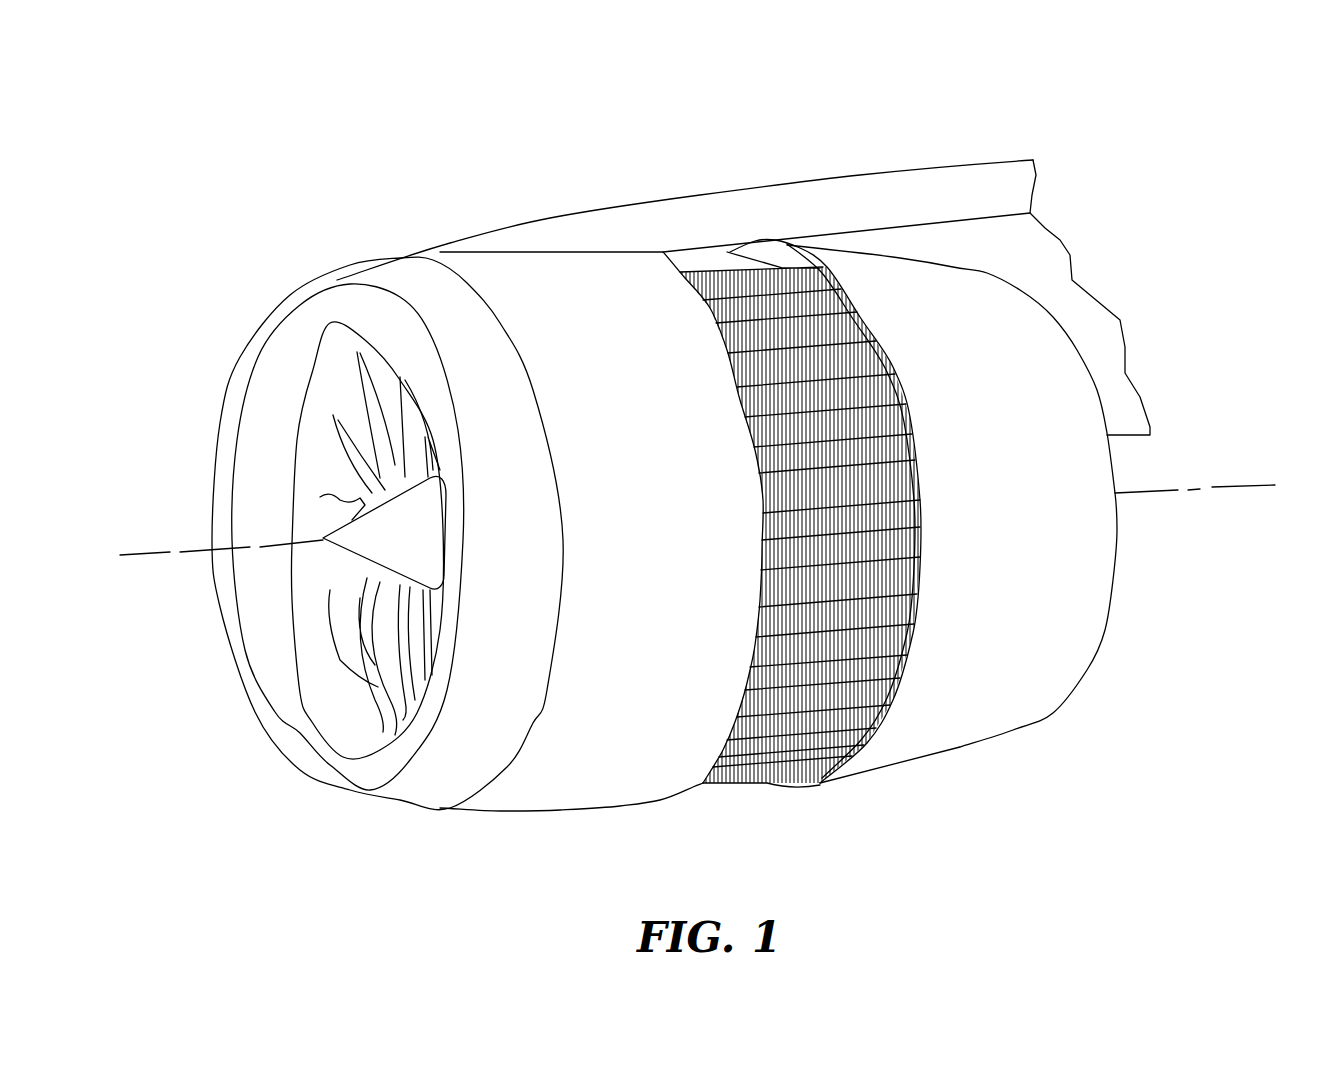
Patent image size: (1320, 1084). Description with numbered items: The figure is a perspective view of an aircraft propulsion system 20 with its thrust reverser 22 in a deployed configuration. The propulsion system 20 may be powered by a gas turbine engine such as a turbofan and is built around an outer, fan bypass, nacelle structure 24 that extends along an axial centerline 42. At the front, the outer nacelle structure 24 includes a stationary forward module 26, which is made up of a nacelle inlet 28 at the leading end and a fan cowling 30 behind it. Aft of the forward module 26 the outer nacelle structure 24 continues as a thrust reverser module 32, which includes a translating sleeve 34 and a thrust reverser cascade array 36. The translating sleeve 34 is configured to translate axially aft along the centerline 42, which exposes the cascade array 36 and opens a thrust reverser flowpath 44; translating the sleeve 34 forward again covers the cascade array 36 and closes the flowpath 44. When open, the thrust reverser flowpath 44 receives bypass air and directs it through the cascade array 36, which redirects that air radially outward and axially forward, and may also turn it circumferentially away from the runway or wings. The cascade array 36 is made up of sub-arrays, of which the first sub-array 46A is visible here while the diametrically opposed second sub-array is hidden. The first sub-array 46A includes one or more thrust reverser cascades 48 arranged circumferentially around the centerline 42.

The propulsion system 20 is at (246, 118).
The thrust reverser 22 is at (768, 228).
The outer nacelle structure 24 is at (398, 237).
The stationary forward module 26 is at (368, 268).
The nacelle inlet 28 is at (400, 808).
The fan cowling 30 is at (525, 817).
The thrust reverser module 32 is at (839, 800).
The translating sleeve 34 is at (913, 762).
The thrust reverser cascade array 36 is at (727, 793).
The axial centerline 42 is at (1232, 485).
The thrust reverser flowpath 44 is at (821, 300).
The first sub-array 46A is at (926, 568).
The thrust reverser cascade 48 is at (730, 323).